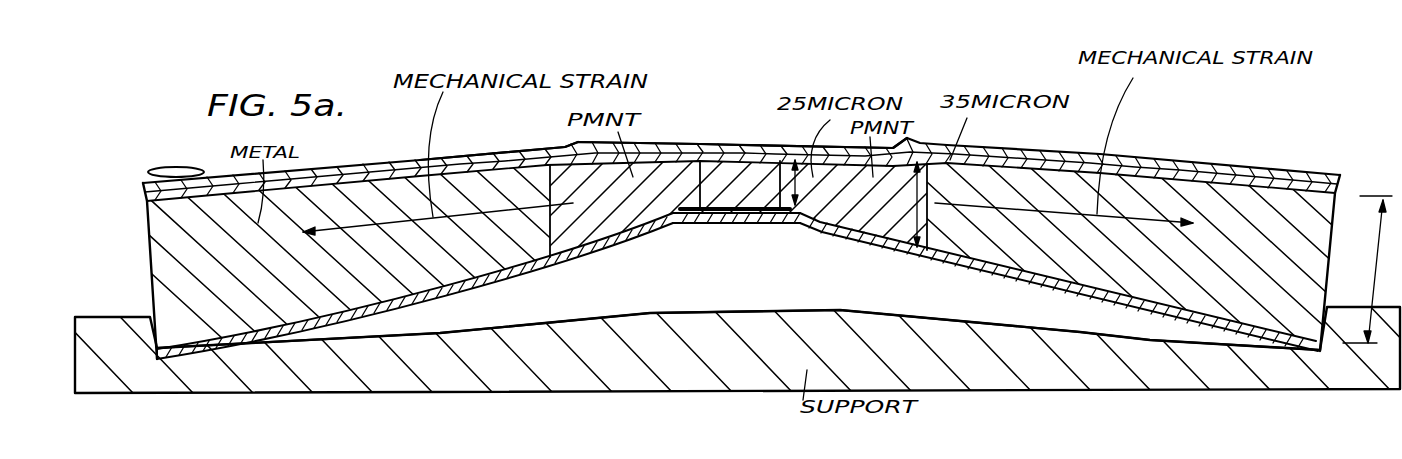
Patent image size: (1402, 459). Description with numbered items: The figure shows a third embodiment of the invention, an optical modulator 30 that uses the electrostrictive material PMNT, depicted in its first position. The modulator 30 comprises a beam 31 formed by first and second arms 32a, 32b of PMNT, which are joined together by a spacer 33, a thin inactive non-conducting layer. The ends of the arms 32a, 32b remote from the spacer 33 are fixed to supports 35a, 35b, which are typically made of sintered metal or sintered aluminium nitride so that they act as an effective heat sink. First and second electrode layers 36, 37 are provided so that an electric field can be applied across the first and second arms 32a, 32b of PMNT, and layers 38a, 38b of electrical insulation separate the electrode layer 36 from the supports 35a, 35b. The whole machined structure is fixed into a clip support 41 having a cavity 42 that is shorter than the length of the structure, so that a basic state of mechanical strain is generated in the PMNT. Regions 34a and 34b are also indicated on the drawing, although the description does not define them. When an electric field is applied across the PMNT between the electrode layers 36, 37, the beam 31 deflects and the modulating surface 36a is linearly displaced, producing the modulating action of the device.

The optical modulator 30 is at (1170, 146).
The beam 31 is at (736, 237).
The first arm 32a is at (645, 205).
The second arm 32b is at (840, 212).
The spacer 33 is at (757, 196).
The left support portion 34a is at (560, 226).
The right support portion 34b is at (910, 250).
The support 35a is at (458, 283).
The support 35b is at (1023, 268).
The first electrode layer 36 is at (488, 150).
The modulating surface 36a is at (730, 134).
The second electrode layer 37 is at (388, 308).
The layer of electrical insulation 38a is at (402, 173).
The layer of electrical insulation 38b is at (1240, 177).
The clip support 41 is at (210, 382).
The cavity 42 is at (347, 338).